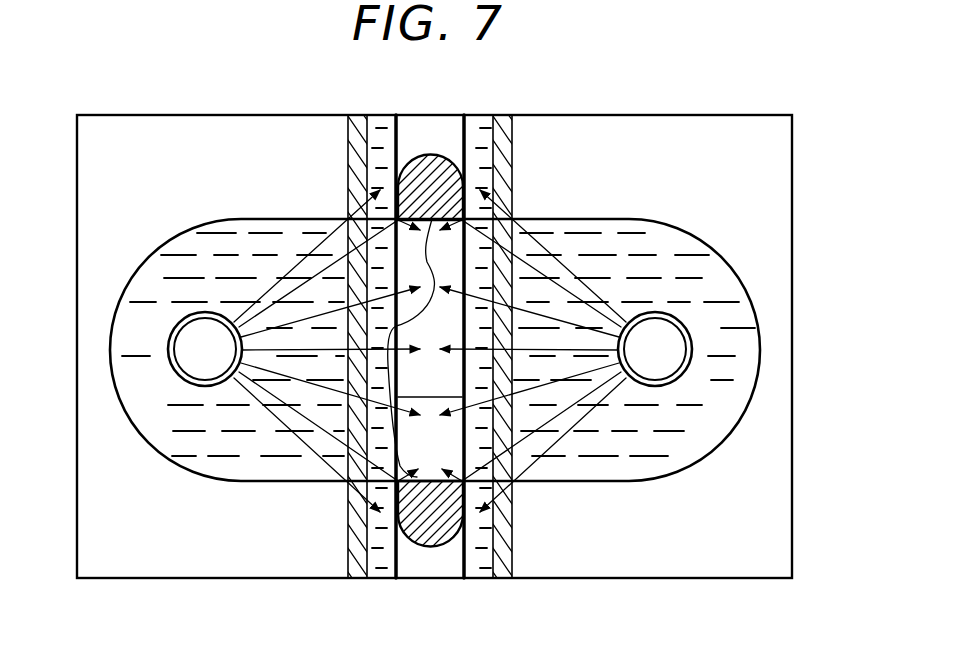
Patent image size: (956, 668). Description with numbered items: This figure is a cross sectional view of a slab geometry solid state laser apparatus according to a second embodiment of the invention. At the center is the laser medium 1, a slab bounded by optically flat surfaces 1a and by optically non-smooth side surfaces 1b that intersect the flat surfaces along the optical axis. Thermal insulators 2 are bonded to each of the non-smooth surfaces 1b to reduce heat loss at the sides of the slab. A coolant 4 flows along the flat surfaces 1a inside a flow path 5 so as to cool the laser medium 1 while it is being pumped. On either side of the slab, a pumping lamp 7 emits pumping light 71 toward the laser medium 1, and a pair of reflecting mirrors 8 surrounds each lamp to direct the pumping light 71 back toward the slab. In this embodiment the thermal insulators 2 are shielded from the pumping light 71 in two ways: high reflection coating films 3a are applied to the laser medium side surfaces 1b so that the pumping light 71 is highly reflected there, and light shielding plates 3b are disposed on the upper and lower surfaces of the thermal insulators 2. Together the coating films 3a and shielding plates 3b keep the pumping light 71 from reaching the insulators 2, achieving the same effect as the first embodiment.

The laser medium 1 is at (428, 331).
The optically flat surfaces 1a is at (467, 362).
The optically non-smooth surfaces 1b is at (396, 326).
The thermal insulators 2 is at (425, 153).
The high reflection coating films 3a is at (408, 156).
The light shielding plates 3b is at (468, 146).
The coolant 4 is at (482, 206).
The flow path 5 is at (495, 292).
The pumping lamp 7 is at (185, 349).
The pumping light 71 is at (302, 420).
The reflecting mirrors 8 is at (158, 238).